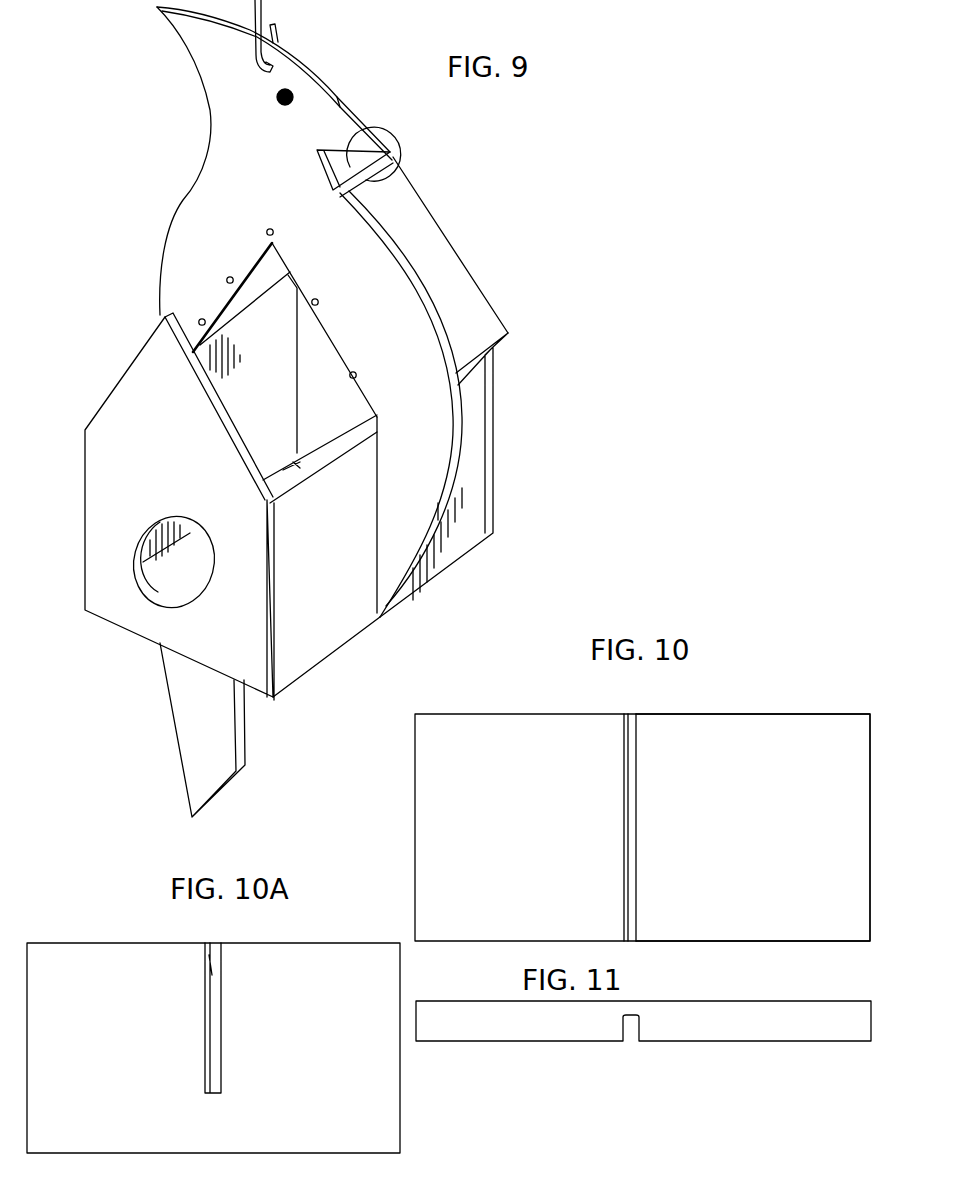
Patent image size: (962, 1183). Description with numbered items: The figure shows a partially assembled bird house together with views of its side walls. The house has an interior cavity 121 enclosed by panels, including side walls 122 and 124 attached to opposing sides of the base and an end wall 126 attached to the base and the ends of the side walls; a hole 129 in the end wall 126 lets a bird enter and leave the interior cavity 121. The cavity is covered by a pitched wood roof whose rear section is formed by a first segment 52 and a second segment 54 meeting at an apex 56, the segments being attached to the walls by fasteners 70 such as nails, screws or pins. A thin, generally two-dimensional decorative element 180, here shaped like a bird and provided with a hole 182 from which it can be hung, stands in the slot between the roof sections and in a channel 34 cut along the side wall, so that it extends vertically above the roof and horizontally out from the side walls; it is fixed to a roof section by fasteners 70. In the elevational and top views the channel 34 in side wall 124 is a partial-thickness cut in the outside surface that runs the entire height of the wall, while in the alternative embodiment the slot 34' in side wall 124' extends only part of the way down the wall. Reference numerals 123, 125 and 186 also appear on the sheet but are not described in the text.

In FIG. 9, the channel 34 is at (452, 505).
In FIG. 10, the channel 34 is at (602, 810).
In FIG. 11, the channel 34 is at (652, 1053).
In FIG. 10A, the slot 34' is at (179, 1005).
In FIG. 9, the first segment 52 is at (410, 180).
In FIG. 9, the second segment 54 is at (420, 235).
In FIG. 9, the apex 56 is at (358, 128).
In FIG. 9, the fasteners 70 is at (267, 233).
In FIG. 9, the interior cavity 121 is at (297, 455).
In FIG. 9, the side wall 122 is at (245, 397).
In FIG. 9, the roof edge board 123 is at (196, 366).
In FIG. 9, the side wall 124 is at (454, 475).
In FIG. 10, the side wall 124 is at (642, 809).
In FIG. 11, the side wall 124 is at (643, 1039).
In FIG. 10A, the side wall 124' is at (252, 1048).
In FIG. 9, the front side panel 125 is at (410, 590).
In FIG. 10, the front side panel 125 is at (843, 714).
In FIG. 11, the front side panel 125 is at (822, 1028).
In FIG. 9, the end wall 126 is at (158, 625).
In FIG. 9, the hole 129 is at (157, 592).
In FIG. 9, the decorative element 180 is at (333, 46).
In FIG. 9, the hole 182 is at (315, 36).
In FIG. 9, the hatched slot region 186 is at (425, 486).